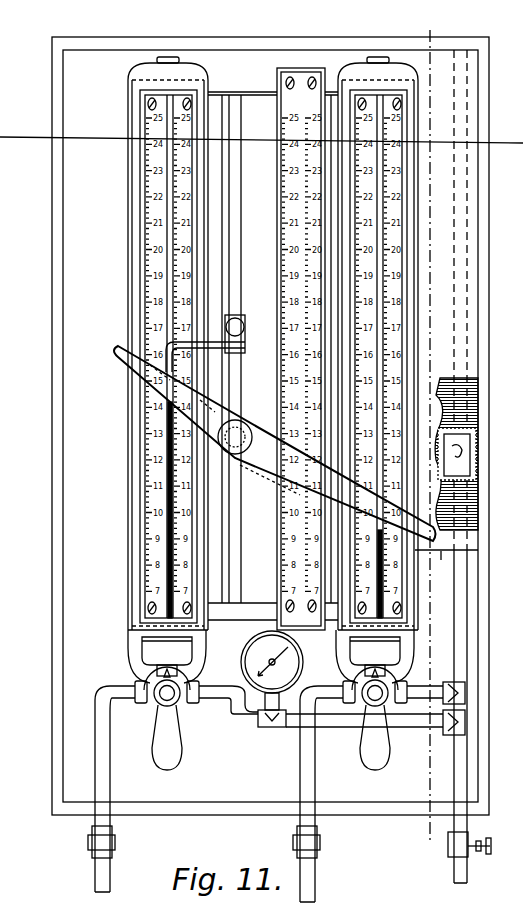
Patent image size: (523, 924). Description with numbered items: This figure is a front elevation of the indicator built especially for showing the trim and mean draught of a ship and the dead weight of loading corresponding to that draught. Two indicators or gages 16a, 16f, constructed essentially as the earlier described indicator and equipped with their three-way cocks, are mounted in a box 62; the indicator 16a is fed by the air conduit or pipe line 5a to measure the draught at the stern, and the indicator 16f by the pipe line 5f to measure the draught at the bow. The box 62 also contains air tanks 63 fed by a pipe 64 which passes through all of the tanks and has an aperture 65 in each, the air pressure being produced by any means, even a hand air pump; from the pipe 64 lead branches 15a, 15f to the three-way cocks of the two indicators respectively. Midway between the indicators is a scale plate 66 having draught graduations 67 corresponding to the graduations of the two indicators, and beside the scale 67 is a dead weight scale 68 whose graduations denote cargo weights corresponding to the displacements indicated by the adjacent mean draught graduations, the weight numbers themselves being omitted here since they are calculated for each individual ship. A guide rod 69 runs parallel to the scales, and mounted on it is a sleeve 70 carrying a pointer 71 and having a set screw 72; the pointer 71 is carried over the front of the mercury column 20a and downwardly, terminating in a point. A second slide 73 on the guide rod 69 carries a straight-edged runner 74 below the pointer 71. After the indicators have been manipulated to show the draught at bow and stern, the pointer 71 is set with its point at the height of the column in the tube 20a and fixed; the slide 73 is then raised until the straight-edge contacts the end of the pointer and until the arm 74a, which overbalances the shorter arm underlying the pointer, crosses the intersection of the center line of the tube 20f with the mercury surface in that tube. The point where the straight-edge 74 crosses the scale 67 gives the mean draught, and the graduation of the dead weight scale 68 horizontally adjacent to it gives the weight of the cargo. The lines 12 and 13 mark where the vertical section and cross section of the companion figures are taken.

The air conduit or pipe line 5a is at (108, 793).
The pipe line 5f is at (313, 793).
The section line 12— 12 is at (452, 448).
The section line 13— 13 is at (261, 139).
The branch 15a is at (409, 724).
The branch 15f is at (408, 689).
The indicator or gage 16a is at (128, 284).
The indicator 16f is at (412, 260).
The mercury column tube 20a is at (165, 243).
The mercury column tube 20f is at (380, 304).
The box 62 is at (55, 460).
The air tanks 63 is at (470, 465).
The pipe 64 is at (462, 583).
The aperture 65 is at (455, 450).
The scale plate 66 is at (291, 77).
The draught graduations 67 is at (292, 158).
The dead weight scale 68 is at (325, 92).
The guide rod 69 is at (233, 213).
The sleeve 70 is at (242, 349).
The pointer 71 is at (166, 350).
The set screw 72 is at (238, 328).
The second slide 73 is at (256, 431).
The straight-edged runner 74 is at (172, 400).
The arm 74a is at (437, 568).